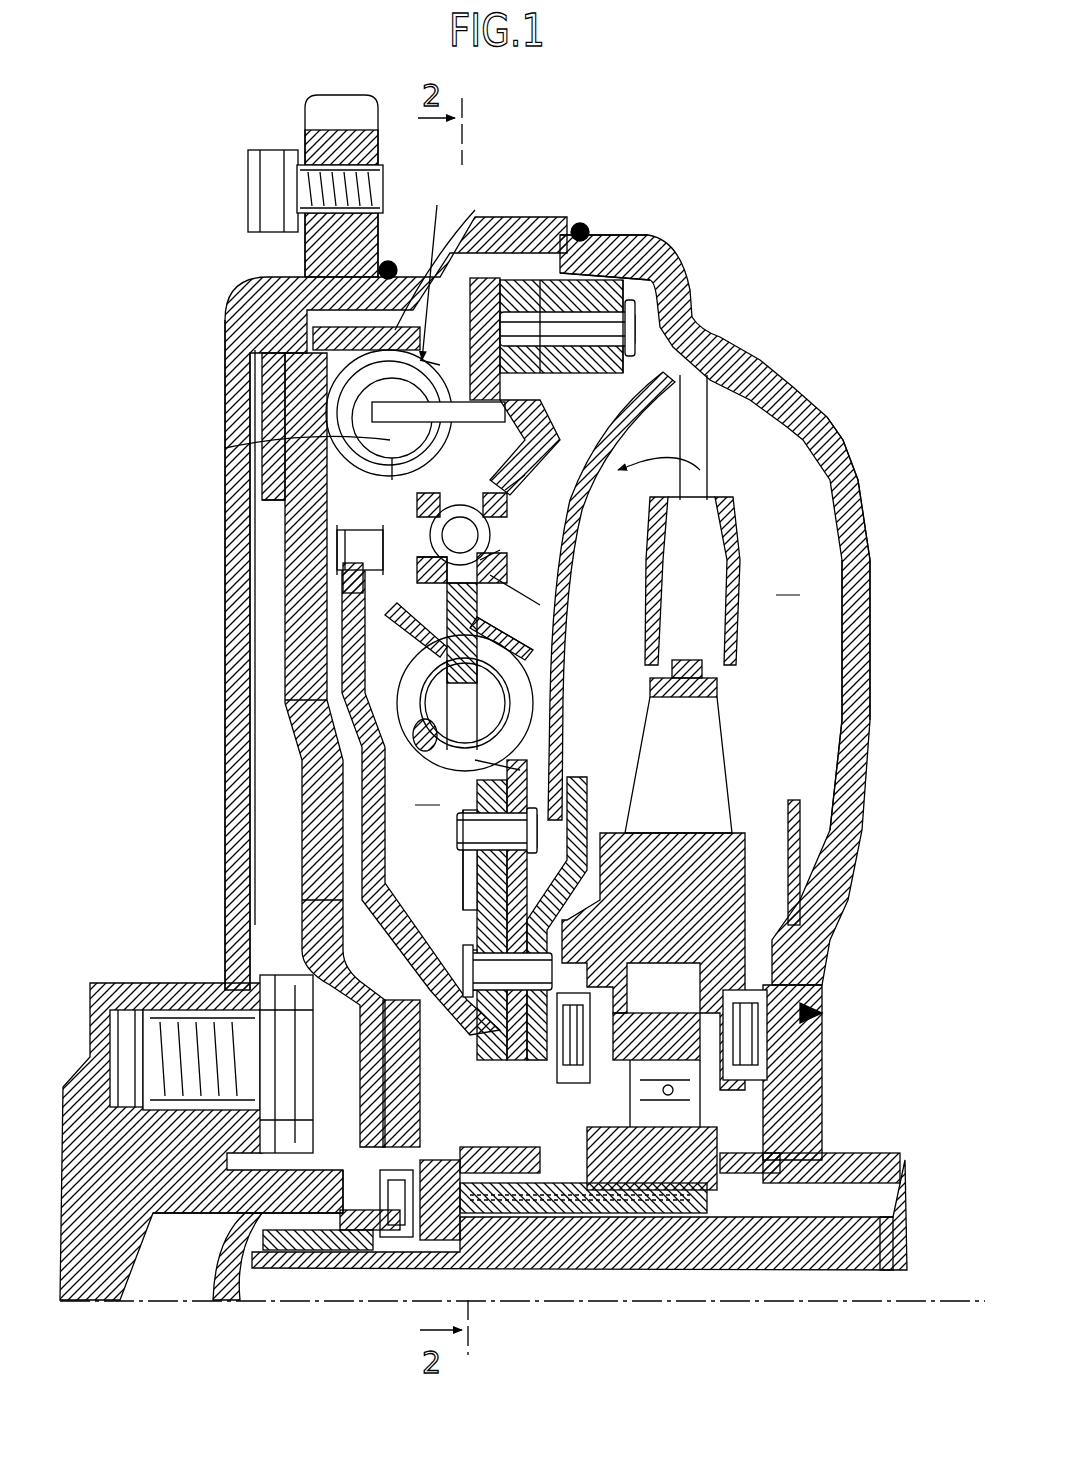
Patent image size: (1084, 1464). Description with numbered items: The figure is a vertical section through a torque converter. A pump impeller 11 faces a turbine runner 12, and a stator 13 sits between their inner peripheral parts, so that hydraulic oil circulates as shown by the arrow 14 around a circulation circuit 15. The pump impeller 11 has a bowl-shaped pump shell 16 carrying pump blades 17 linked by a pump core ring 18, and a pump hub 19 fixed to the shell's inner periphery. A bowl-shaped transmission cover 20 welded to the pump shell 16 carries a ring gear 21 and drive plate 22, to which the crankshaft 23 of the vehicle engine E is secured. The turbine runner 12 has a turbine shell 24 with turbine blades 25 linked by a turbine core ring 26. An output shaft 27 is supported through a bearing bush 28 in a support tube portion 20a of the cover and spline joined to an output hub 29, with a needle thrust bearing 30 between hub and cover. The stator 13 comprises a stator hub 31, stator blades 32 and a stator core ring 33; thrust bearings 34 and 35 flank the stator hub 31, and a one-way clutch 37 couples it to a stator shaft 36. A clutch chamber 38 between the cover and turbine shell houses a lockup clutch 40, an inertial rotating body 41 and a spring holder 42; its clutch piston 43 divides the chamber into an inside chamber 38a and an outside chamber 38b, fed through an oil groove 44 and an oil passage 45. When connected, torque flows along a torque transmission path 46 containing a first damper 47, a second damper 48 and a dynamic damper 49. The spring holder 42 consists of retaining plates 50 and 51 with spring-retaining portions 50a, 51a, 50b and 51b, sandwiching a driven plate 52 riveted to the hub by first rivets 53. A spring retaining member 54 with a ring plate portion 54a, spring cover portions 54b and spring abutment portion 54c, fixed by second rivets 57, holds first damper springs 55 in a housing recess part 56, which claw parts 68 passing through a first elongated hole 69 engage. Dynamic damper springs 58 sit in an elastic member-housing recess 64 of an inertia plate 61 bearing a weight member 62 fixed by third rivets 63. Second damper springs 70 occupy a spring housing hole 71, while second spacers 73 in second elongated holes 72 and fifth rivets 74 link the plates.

The pump impeller 11 is at (760, 340).
The turbine runner 12 is at (658, 368).
The stator 13 is at (738, 755).
The arrow 14 is at (700, 452).
The circulation circuit 15 is at (788, 582).
The pump shell 16 is at (822, 432).
The pump blades 17 is at (775, 440).
The pump core ring 18 is at (730, 572).
The pump hub 19 is at (790, 1090).
The transmission cover 20 is at (300, 840).
The support tube portion 20a is at (215, 1280).
The ring gear 21 is at (345, 148).
The drive plate 22 is at (220, 880).
The crankshaft 23 is at (85, 1085).
The turbine shell 24 is at (592, 418).
The turbine blades 25 is at (668, 697).
The turbine core ring 26 is at (652, 582).
The output shaft 27 is at (660, 1262).
The bearing bush 28 is at (285, 1240).
The output hub 29 is at (530, 1217).
The needle thrust bearing 30 is at (365, 1240).
The stator hub 31 is at (750, 946).
The stator blades 32 is at (722, 810).
The stator core ring 33 is at (690, 675).
The thrust bearing 34 is at (760, 1043).
The thrust bearing 35 is at (575, 940).
The stator shaft 36 is at (830, 1207).
The one-way clutch 37 is at (710, 1070).
The clutch chamber 38 is at (470, 910).
The inside chamber 38a is at (580, 1250).
The outside chamber 38b is at (240, 900).
The lockup clutch 40 is at (335, 667).
The inertial rotating body 41 is at (545, 280).
The spring holder 42 is at (538, 492).
The clutch piston 43 is at (370, 795).
The oil groove 44 is at (395, 1100).
The oil passage 45 is at (803, 1182).
The torque transmission path 46 is at (322, 925).
The first damper 47 is at (436, 271).
The second damper 48 is at (630, 778).
The dynamic damper 49 is at (505, 278).
The retaining plate 50 is at (655, 660).
The spring-retaining portion 50a is at (560, 555).
The spring-retaining portion 50b is at (475, 605).
The retaining plate 51 is at (460, 878).
The spring-retaining portion 51a is at (432, 540).
The spring-retaining portion 51b is at (400, 745).
The driven plate 52 is at (470, 965).
The first rivets 53 is at (465, 990).
The spring retaining member 54 is at (360, 548).
The ring plate portion 54a is at (360, 580).
The spring cover portion 54b is at (450, 256).
The spring abutment portion 54c is at (312, 282).
The first damper spring 55 is at (330, 332).
The housing recess part 56 is at (345, 398).
The second rivets 57 is at (335, 550).
The dynamic damper spring 58 is at (440, 590).
The inertia plate 61 is at (495, 493).
The weight member 62 is at (583, 290).
The third rivets 63 is at (612, 320).
The elastic member-housing recess 64 is at (498, 560).
The claw parts 68 is at (294, 447).
The first elongated hole 69 is at (646, 455).
The second damper spring 70 is at (555, 695).
The spring housing hole 71 is at (545, 600).
The second elongated hole 72 is at (595, 802).
The second spacer 73 is at (537, 848).
The fifth rivets 74 is at (455, 825).
The vehicle engine E is at (95, 1303).